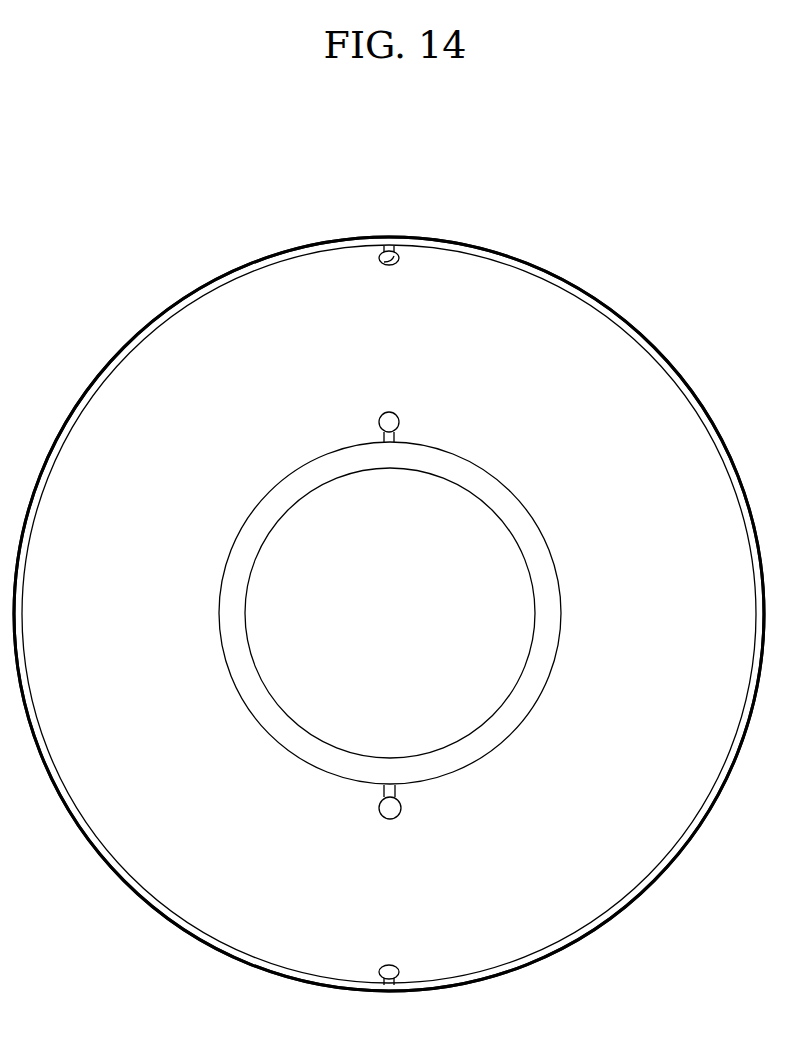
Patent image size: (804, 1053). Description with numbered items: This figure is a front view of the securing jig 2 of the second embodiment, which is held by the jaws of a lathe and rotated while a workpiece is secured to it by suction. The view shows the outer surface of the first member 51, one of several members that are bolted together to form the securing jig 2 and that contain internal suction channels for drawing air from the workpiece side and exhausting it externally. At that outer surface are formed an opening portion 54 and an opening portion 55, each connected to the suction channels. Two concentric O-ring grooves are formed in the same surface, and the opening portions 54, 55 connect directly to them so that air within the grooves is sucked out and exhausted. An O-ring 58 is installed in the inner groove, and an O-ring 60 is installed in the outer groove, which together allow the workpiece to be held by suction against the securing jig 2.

The securing jig 2 is at (610, 191).
The O-ring 60 is at (252, 270).
The first member 51 is at (318, 272).
The opening portion 55 is at (398, 263).
The O-ring 58 is at (550, 624).
The opening portion 54 is at (397, 415).